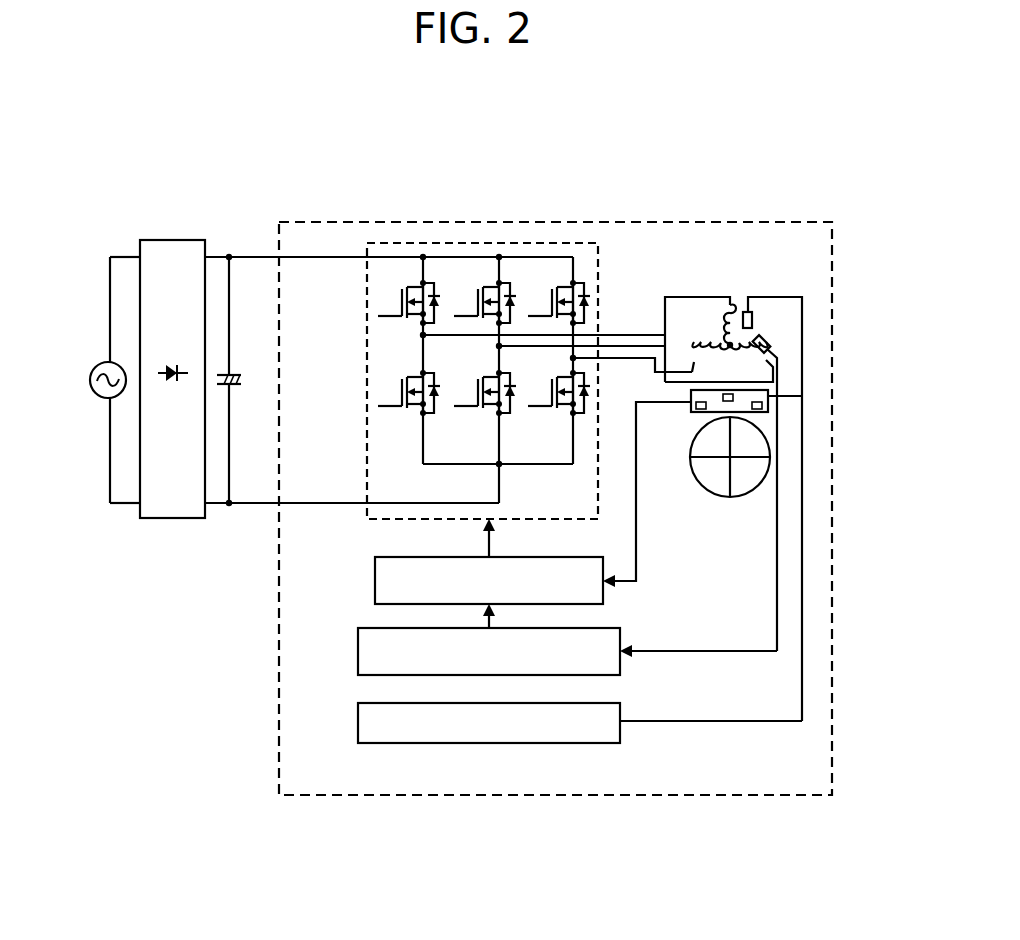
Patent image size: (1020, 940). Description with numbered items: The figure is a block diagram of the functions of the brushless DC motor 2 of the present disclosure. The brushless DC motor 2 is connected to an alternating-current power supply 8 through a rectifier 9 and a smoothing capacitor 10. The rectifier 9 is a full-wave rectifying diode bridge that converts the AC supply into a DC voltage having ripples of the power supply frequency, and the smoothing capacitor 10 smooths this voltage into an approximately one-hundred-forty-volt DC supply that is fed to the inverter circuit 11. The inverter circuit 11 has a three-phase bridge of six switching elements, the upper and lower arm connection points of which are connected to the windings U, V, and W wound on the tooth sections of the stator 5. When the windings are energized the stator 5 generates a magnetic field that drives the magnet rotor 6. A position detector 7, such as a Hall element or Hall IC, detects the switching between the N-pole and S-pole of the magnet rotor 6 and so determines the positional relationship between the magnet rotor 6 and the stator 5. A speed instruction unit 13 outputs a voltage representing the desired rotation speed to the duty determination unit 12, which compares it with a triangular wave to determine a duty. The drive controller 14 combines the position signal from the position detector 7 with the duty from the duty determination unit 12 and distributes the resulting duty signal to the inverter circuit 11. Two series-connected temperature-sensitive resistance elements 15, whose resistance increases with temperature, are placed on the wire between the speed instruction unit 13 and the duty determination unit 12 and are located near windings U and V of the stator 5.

The brushless DC motor 2 is at (700, 222).
The stator 5 is at (715, 297).
The magnet rotor 6 is at (766, 484).
The position detector 7 is at (802, 400).
The alternating-current power supply 8 is at (98, 362).
The rectifier 9 is at (165, 240).
The smoothing capacitor 10 is at (229, 368).
The inverter circuit 11 is at (568, 243).
The duty determination unit 12 is at (358, 657).
The speed instruction unit 13 is at (358, 728).
The drive controller 14 is at (375, 587).
The temperature-sensitive resistance elements 15 is at (752, 318).